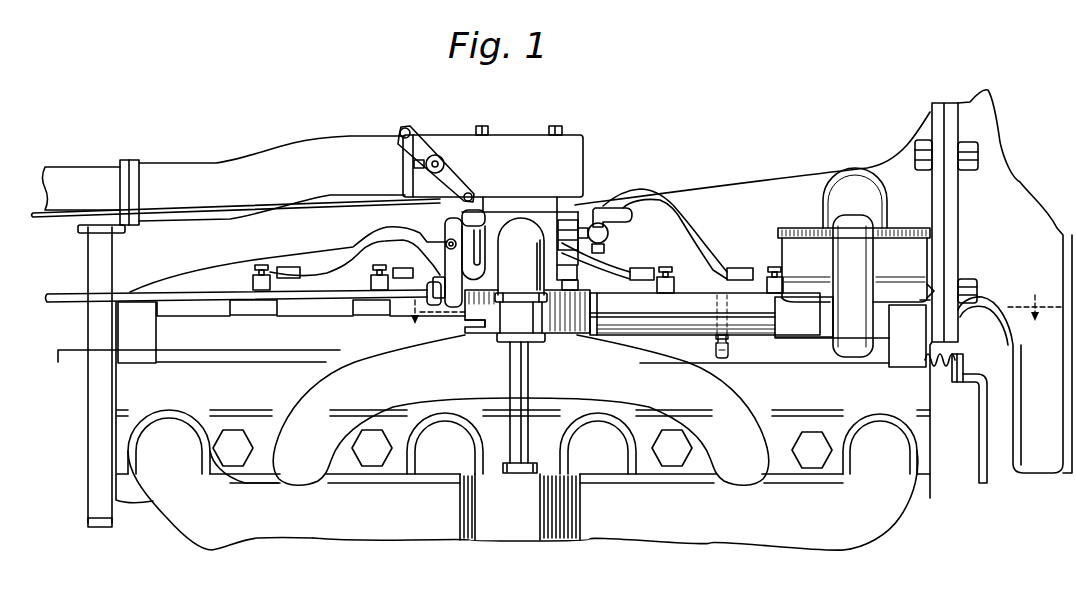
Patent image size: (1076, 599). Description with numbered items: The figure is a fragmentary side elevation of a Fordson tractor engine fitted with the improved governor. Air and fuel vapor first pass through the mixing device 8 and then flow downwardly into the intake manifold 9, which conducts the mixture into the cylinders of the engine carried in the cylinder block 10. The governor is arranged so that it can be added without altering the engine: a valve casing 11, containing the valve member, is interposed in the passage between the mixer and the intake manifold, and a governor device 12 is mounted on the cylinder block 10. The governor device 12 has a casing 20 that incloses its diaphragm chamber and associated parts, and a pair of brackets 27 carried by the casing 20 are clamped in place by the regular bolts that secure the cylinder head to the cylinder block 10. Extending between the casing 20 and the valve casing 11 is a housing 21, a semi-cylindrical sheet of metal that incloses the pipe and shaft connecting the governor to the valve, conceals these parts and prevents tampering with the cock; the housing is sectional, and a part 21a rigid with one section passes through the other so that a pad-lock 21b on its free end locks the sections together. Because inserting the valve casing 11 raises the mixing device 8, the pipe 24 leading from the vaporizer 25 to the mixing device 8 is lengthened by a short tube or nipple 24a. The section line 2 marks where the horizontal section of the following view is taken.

The section line 2— 2 is at (730, 308).
The mixing device 8 is at (565, 210).
The intake manifold 9 is at (704, 393).
The cylinder block 10 is at (920, 398).
The valve casing 11 is at (467, 340).
The governor device 12 is at (806, 217).
The casing 20 is at (930, 245).
The housing 21 is at (744, 328).
The locking part 21a is at (726, 340).
The pad-lock 21b is at (716, 336).
The pipe 24 is at (513, 364).
The short tube or nipple 24a is at (543, 316).
The vaporizer 25 is at (490, 513).
The brackets 27 is at (930, 289).